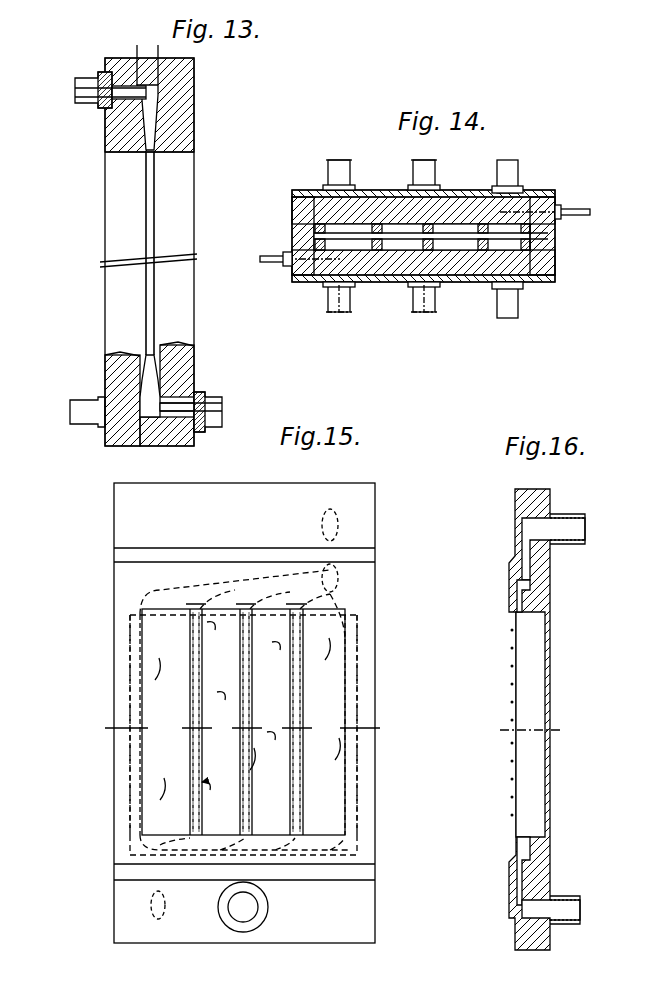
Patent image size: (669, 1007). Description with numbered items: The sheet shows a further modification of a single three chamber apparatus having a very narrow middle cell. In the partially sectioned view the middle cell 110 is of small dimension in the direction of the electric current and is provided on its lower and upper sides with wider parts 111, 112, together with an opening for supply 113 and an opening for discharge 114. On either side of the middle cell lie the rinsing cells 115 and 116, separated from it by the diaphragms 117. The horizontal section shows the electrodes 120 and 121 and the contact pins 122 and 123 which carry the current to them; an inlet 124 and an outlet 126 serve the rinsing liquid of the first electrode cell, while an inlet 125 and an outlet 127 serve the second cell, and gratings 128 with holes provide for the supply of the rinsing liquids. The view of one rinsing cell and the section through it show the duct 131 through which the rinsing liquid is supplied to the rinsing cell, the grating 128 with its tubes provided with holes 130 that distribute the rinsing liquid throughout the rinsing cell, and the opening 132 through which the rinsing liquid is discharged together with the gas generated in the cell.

In FIG. 13, the middle cell 110 is at (140, 150).
In FIG. 14, the middle cell 110 is at (392, 236).
In FIG. 13, the wider part 111 is at (148, 395).
In FIG. 13, the wider part 112 is at (152, 98).
In FIG. 13, the opening for supply 113 is at (222, 405).
In FIG. 14, the opening for supply 113 is at (430, 170).
In FIG. 15, the opening for supply 113 is at (243, 917).
In FIG. 13, the opening for discharge 114 is at (90, 88).
In FIG. 14, the opening for discharge 114 is at (418, 314).
In FIG. 13, the rinsing cell 115 is at (194, 127).
In FIG. 14, the rinsing cell 115 is at (545, 196).
In FIG. 15, the rinsing cell 115 is at (376, 495).
In FIG. 16, the rinsing cell 115 is at (545, 500).
In FIG. 13, the rinsing cell 116 is at (105, 127).
In FIG. 14, the rinsing cell 116 is at (308, 276).
In FIG. 13, the diaphragms 117 is at (154, 292).
In FIG. 14, the diaphragms 117 is at (484, 250).
In FIG. 14, the electrode 120 is at (300, 206).
In FIG. 14, the electrode 121 is at (545, 262).
In FIG. 14, the contact pin 122 is at (590, 210).
In FIG. 14, the contact pin 123 is at (278, 264).
In FIG. 14, the inlet 124 is at (340, 162).
In FIG. 14, the inlet 125 is at (515, 304).
In FIG. 15, the inlet 125 is at (150, 903).
In FIG. 16, the inlet 125 is at (566, 900).
In FIG. 14, the outlet 126 is at (515, 170).
In FIG. 15, the outlet 126 is at (338, 522).
In FIG. 16, the outlet 126 is at (578, 530).
In FIG. 14, the outlet 127 is at (336, 314).
In FIG. 14, the gratings 128 is at (482, 228).
In FIG. 15, the gratings 128 is at (345, 640).
In FIG. 15, the holes 130 is at (295, 700).
In FIG. 16, the holes 130 is at (511, 675).
In FIG. 15, the duct 131 is at (358, 848).
In FIG. 16, the duct 131 is at (512, 862).
In FIG. 15, the opening 132 is at (340, 575).
In FIG. 16, the opening 132 is at (515, 582).